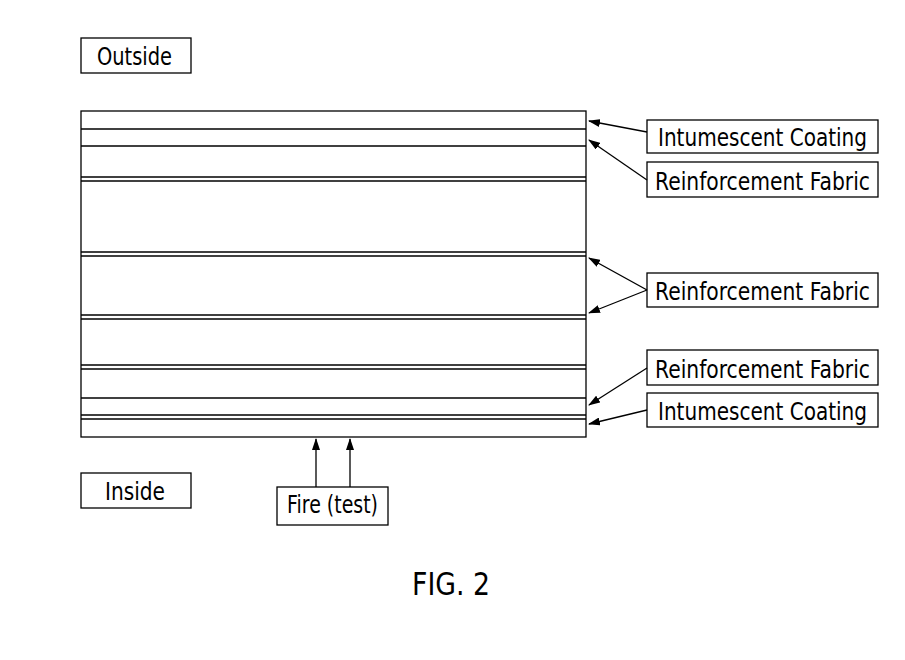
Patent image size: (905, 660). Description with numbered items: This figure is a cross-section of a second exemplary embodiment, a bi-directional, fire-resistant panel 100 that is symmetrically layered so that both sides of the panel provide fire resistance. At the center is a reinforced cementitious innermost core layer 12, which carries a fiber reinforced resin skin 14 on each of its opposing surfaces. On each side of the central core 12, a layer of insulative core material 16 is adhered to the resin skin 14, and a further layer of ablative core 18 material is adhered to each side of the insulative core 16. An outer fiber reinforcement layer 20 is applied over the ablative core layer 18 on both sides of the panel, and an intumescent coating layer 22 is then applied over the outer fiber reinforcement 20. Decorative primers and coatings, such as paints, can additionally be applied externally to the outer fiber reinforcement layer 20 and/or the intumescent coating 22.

The bi-directional fire-resistant panel 100 is at (660, 38).
The reinforced cementitious innermost core layer 12 is at (81, 285).
The fiber reinforced resin skin 14 is at (81, 253).
The insulative core material layer 16 is at (81, 218).
The ablative core layer 18 is at (81, 168).
The outer fiber reinforcement layer 20 is at (81, 142).
The intumescent coating layer 22 is at (81, 115).